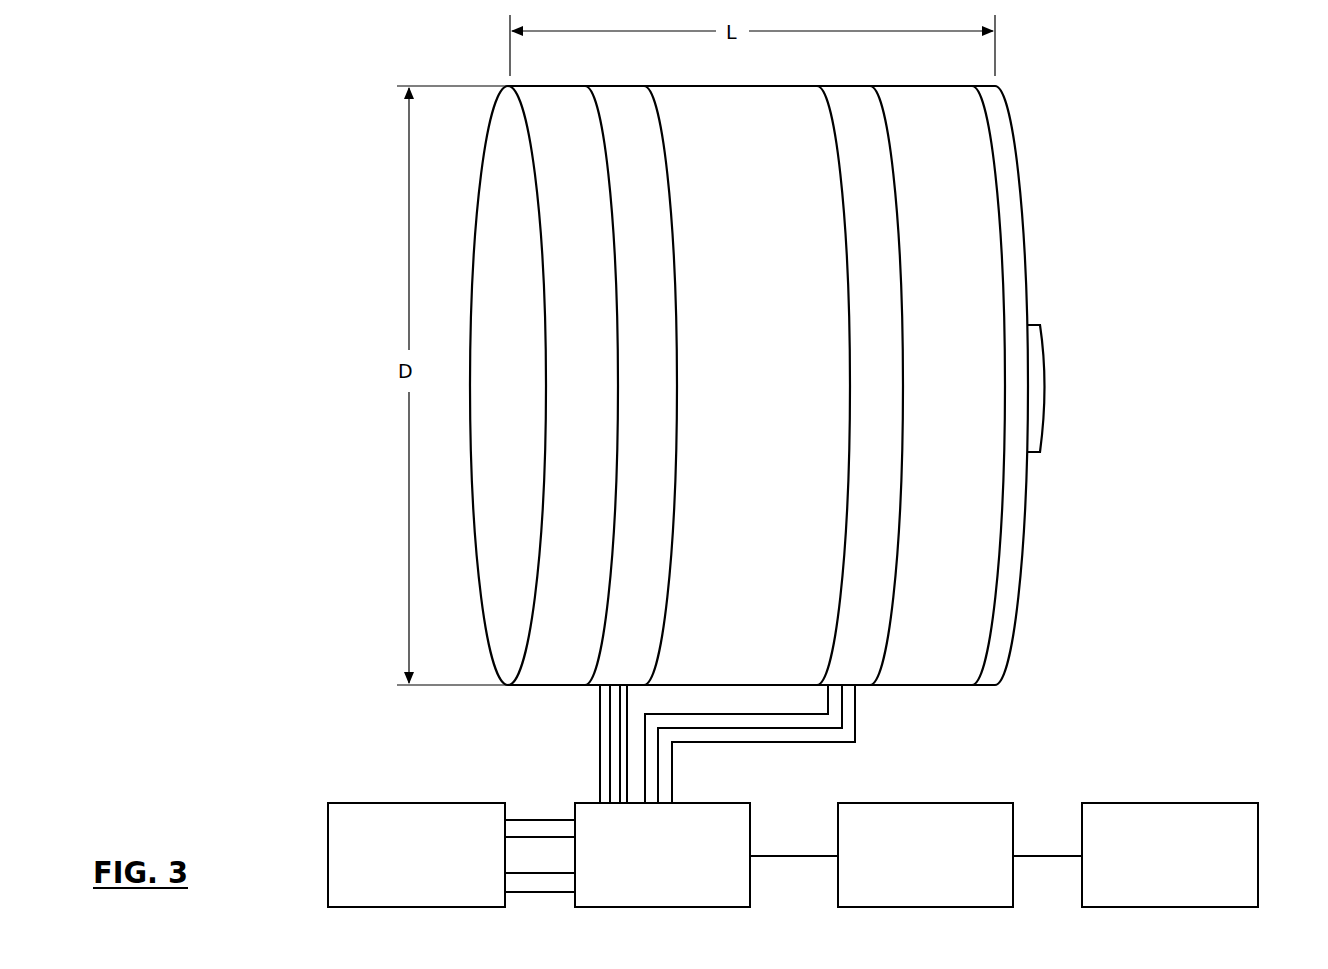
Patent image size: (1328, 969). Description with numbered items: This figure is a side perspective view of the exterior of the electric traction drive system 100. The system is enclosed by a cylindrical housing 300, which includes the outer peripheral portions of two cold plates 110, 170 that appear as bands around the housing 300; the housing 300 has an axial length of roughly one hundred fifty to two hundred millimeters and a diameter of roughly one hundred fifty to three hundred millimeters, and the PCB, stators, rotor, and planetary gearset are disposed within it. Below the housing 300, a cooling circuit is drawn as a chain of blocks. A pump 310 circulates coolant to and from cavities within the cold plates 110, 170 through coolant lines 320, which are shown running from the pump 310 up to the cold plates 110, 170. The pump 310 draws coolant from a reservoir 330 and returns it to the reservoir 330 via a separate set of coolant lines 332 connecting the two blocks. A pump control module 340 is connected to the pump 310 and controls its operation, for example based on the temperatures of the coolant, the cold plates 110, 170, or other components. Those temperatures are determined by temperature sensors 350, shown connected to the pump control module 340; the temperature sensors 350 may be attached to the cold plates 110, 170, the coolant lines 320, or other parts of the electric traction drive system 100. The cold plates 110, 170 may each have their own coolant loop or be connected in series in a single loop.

The electric traction drive system 100 is at (397, 62).
The cold plate 110 is at (620, 90).
The cold plate 170 is at (846, 90).
The housing 300 is at (482, 167).
The pump 310 is at (575, 803).
The coolant lines 320 is at (608, 707).
The reservoir 330 is at (398, 803).
The coolant lines 332 is at (522, 818).
The pump control module 340 is at (982, 803).
The temperature sensors 350 is at (1222, 803).